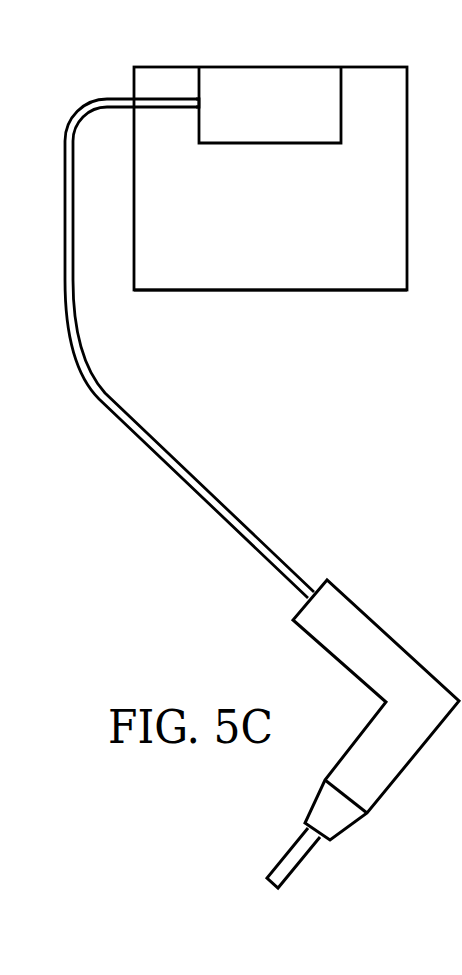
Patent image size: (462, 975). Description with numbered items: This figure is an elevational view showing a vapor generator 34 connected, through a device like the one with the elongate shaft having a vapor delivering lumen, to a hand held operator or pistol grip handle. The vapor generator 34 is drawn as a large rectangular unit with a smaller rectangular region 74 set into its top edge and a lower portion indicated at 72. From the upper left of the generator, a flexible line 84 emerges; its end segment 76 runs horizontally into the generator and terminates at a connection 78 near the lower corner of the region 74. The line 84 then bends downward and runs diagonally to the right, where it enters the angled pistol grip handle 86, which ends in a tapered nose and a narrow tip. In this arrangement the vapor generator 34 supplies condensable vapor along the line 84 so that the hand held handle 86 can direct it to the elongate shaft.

The vapor generator 34 is at (410, 183).
The housing 72 is at (352, 291).
The connector receptacle 74 is at (300, 72).
The cable end 76 is at (155, 97).
The cable connector 78 is at (195, 110).
The cable 84 is at (190, 480).
The handpiece 86 is at (372, 613).